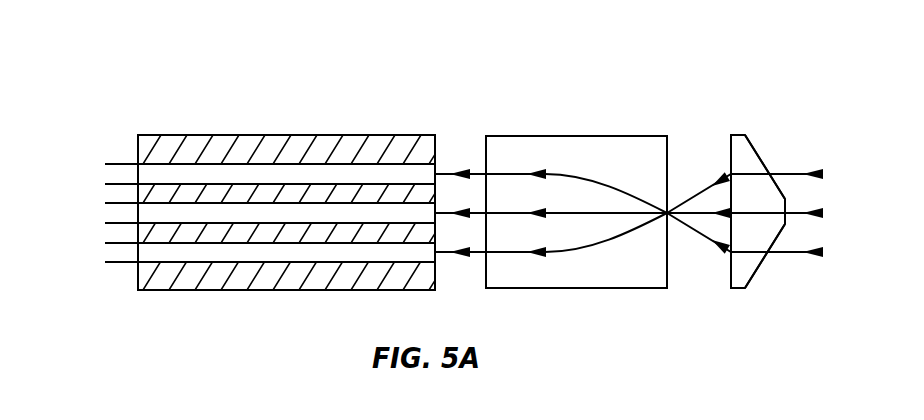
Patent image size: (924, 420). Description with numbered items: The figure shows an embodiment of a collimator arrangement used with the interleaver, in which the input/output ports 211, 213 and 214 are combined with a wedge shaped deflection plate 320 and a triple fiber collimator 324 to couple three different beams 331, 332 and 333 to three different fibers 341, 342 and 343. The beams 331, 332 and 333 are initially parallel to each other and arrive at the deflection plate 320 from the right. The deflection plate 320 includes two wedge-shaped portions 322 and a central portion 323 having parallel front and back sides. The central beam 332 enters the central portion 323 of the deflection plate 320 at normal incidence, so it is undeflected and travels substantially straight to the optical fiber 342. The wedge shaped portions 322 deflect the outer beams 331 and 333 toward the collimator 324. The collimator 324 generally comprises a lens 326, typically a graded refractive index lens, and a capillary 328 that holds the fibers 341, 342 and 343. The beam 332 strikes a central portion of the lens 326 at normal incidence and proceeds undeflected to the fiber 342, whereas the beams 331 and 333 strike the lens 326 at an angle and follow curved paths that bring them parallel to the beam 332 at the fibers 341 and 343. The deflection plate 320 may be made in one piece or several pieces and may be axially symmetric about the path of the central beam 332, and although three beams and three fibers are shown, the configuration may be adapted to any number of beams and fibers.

The triple fiber collimator 324 is at (542, 85).
The input/output port 211 is at (333, 152).
The input/output port 213 is at (252, 200).
The input/output port 214 is at (355, 262).
The capillary 328 is at (242, 290).
The optical fiber 341 is at (117, 163).
The optical fiber 342 is at (130, 203).
The optical fiber 343 is at (116, 254).
The lens 326 is at (573, 288).
The wedge shaped deflection plate 320 is at (740, 288).
The wedge-shaped portion 322 is at (768, 160).
The central portion 323 is at (786, 224).
The beam 331 is at (836, 160).
The beam 332 is at (824, 213).
The beam 333 is at (835, 262).